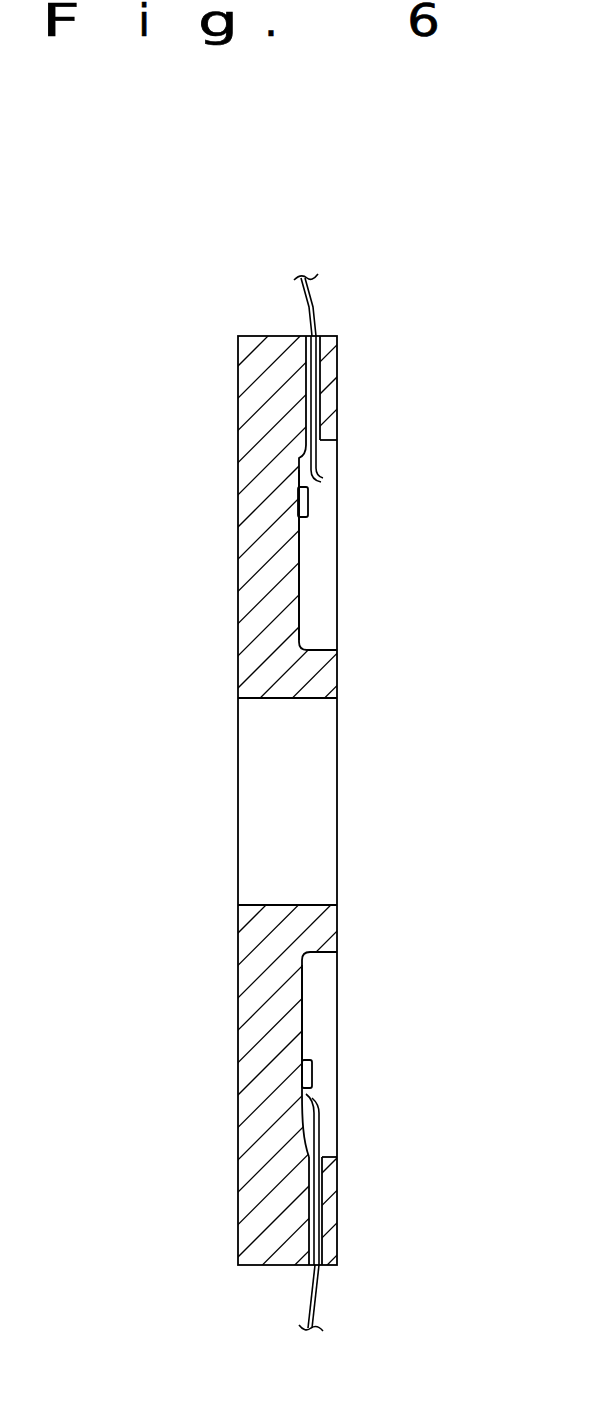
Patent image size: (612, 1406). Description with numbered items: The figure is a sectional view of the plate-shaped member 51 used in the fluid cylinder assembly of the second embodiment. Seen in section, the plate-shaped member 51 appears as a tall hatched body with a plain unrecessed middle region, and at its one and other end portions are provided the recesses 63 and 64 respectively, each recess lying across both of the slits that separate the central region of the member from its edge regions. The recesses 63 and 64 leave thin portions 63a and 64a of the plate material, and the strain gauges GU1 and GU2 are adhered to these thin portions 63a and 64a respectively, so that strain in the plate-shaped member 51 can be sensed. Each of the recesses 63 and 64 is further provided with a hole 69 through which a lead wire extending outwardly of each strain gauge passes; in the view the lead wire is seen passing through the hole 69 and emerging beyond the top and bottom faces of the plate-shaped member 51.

The plate-shaped member 51 is at (256, 420).
The recess 63 is at (310, 578).
The thin portion 63a is at (254, 537).
The recess 64 is at (323, 979).
The thin portion 64a is at (257, 1024).
The hole 69 is at (312, 333).
The strain gauge GU1 is at (308, 500).
The strain gauge GU2 is at (313, 1074).